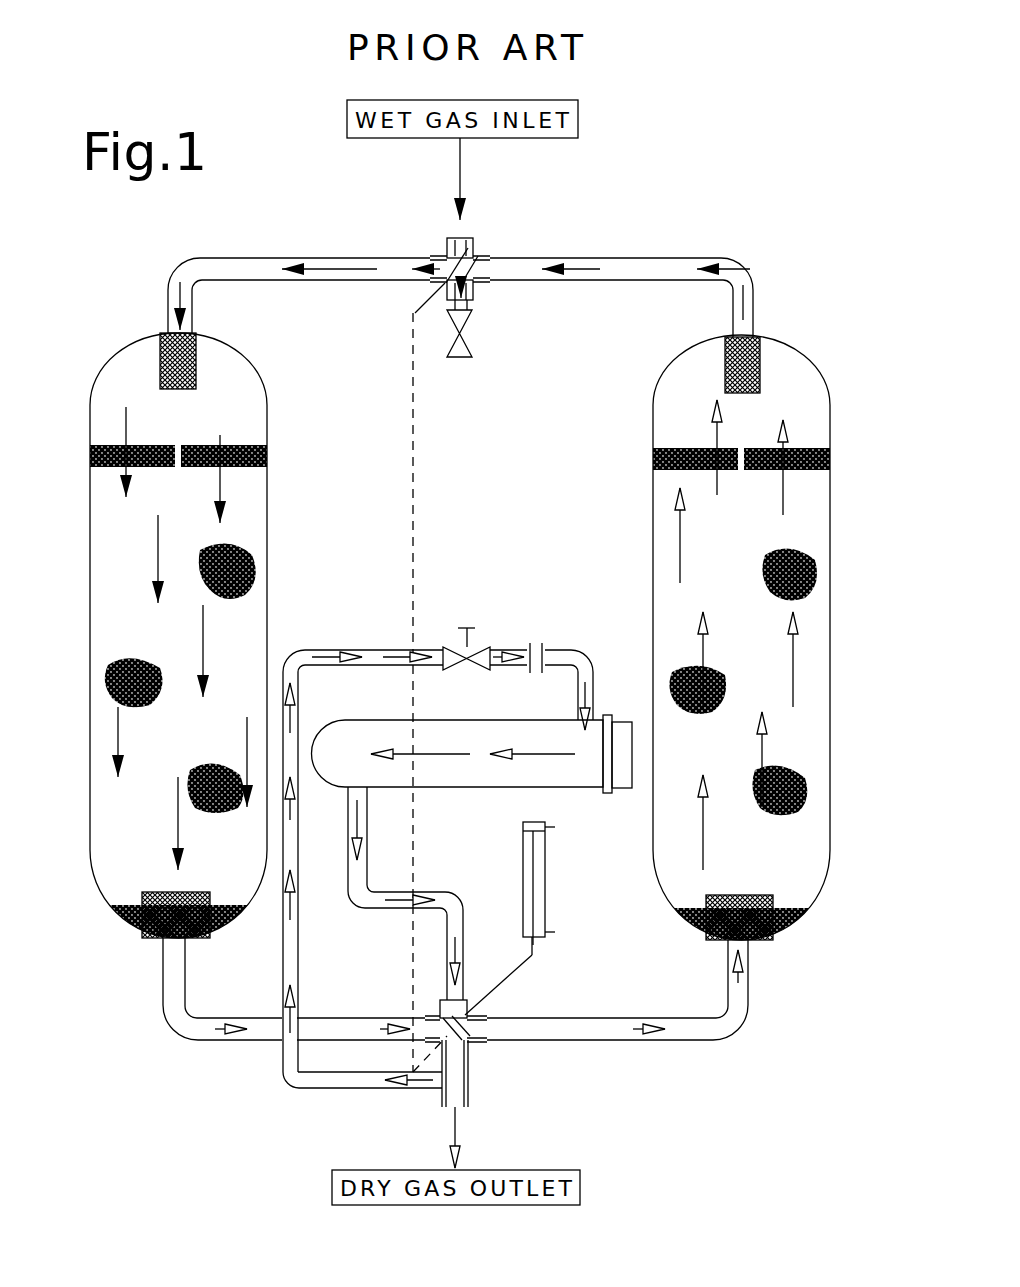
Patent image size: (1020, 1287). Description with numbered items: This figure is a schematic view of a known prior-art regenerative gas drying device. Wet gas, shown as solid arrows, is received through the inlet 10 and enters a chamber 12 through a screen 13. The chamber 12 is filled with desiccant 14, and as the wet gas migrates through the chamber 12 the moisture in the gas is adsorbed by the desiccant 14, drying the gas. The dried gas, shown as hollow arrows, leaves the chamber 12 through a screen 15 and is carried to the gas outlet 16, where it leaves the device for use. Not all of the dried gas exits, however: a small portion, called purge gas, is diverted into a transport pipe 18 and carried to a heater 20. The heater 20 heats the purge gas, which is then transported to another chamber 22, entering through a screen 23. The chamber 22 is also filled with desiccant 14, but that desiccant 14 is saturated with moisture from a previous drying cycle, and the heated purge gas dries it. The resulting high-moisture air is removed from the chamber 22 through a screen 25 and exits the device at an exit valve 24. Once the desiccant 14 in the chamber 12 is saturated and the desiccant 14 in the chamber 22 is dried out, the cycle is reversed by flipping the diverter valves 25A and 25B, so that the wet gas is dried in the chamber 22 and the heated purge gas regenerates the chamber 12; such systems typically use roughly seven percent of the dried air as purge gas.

The inlet 10 is at (448, 238).
The chamber 12 is at (145, 333).
The screen 13 is at (196, 350).
The desiccant 14 is at (235, 445).
The screen 15 is at (185, 940).
The gas outlet 16 is at (463, 1107).
The transport pipe 18 is at (282, 1075).
The heater 20 is at (420, 720).
The chamber 22 is at (653, 578).
The screen 23 is at (760, 945).
The exit valve 24 is at (470, 300).
The screen 25 is at (760, 355).
The diverter valve 25A is at (475, 240).
The diverter valve 25B is at (470, 1028).